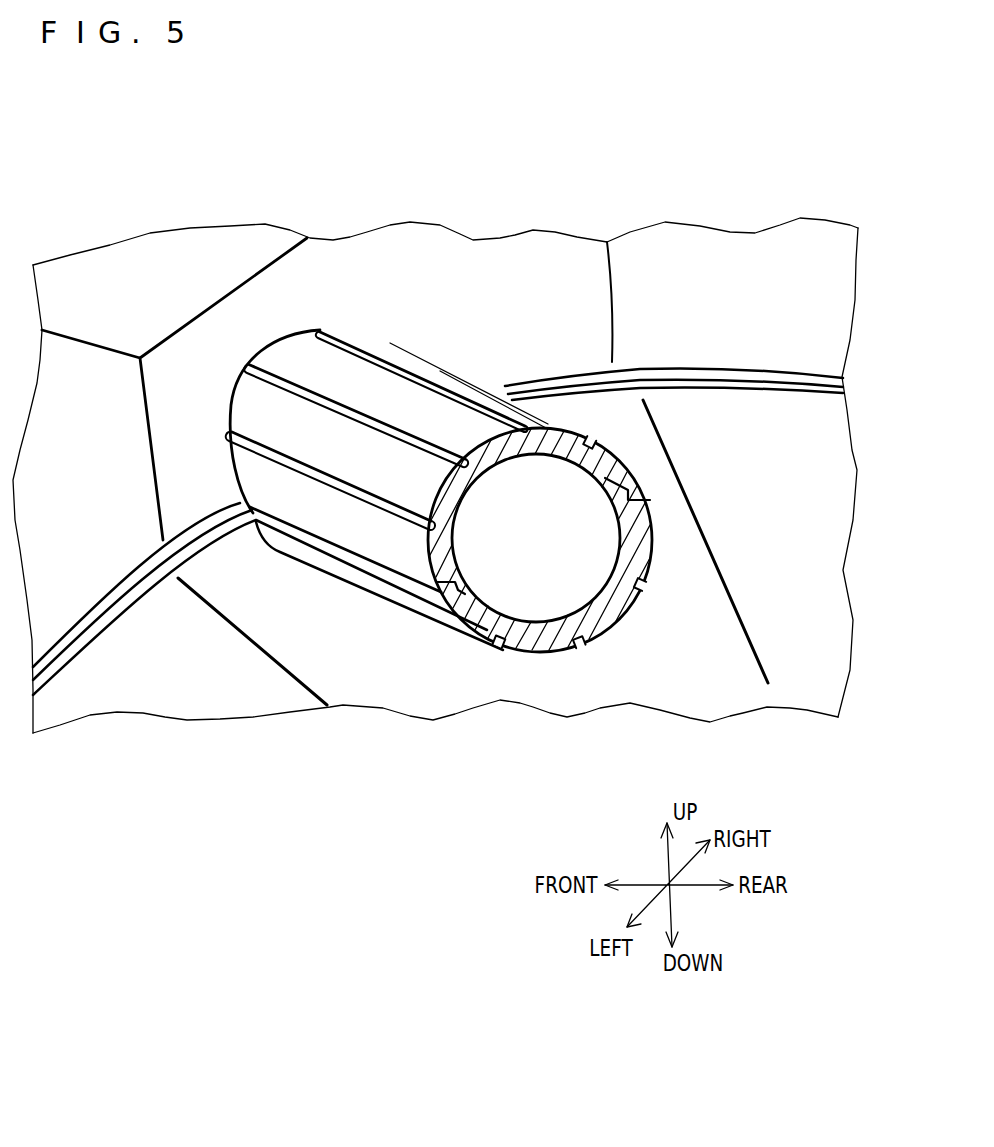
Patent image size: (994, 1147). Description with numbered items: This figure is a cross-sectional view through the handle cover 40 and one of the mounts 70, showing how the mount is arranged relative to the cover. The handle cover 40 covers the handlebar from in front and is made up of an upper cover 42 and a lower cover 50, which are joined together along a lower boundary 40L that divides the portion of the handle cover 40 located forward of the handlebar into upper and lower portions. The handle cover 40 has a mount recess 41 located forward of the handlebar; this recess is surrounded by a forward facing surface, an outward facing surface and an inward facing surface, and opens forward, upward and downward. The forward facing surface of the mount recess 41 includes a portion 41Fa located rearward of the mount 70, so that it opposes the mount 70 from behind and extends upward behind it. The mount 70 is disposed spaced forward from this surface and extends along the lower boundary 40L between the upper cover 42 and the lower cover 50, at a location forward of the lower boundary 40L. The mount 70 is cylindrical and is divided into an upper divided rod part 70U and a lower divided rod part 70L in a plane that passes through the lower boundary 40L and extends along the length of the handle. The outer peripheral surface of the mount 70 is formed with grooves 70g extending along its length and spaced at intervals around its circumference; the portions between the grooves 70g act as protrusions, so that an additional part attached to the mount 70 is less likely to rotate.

The handle cover 40 is at (258, 243).
The mount recess 41 is at (487, 262).
The upper cover 42 is at (332, 263).
The portion of the forward facing surface located rearward of the mount 41Fa is at (806, 240).
The lower boundary 40L is at (662, 380).
The lower cover 50 is at (345, 668).
The mount 70 is at (513, 485).
The upper divided rod part 70U is at (622, 462).
The lower divided rod part 70L is at (643, 533).
The groove 70g is at (255, 443).